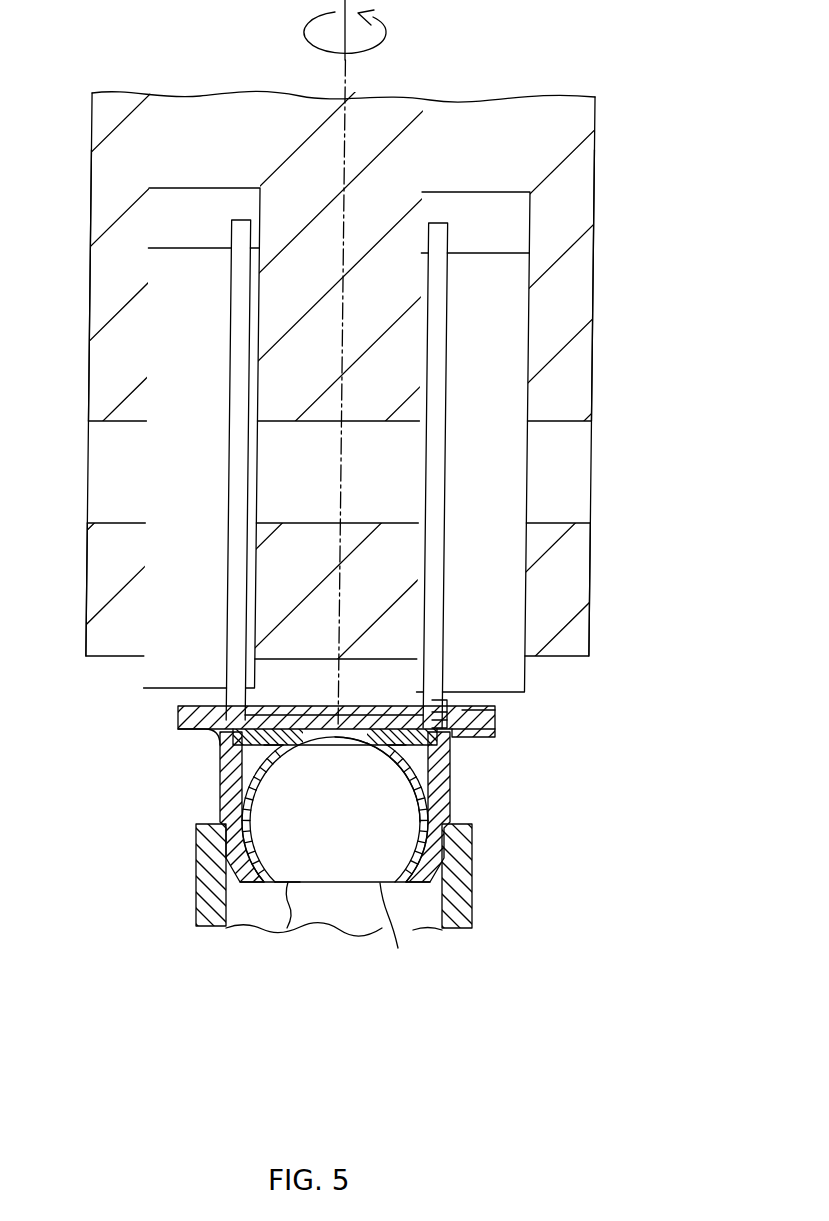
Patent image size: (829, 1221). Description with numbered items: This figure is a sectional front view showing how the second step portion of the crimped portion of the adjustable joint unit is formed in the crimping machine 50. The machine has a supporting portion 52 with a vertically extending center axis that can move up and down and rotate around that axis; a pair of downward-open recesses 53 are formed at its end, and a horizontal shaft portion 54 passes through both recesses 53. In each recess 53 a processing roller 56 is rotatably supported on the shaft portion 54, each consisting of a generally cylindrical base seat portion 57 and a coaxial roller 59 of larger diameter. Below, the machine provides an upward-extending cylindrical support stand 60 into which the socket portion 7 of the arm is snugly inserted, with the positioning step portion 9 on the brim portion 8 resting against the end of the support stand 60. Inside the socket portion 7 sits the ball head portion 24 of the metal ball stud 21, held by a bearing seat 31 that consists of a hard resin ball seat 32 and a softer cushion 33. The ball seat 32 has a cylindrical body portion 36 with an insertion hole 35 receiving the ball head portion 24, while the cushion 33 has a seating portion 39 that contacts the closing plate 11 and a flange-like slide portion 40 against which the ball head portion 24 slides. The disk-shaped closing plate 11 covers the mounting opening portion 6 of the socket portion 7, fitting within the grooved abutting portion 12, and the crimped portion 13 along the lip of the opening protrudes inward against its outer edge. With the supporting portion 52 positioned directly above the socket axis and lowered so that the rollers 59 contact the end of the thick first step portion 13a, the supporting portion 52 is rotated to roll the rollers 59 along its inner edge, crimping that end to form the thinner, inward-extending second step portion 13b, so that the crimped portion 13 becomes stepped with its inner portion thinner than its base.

The crimping machine 50 is at (685, 68).
The supporting portion 52 is at (580, 272).
The shaft portion 54 is at (575, 489).
The processing roller 56 is at (148, 345).
The base seat portion 57 is at (150, 618).
The recess 53 is at (142, 660).
The roller 59 is at (233, 238).
The closing plate 11 is at (348, 723).
The mounting opening portion 6 is at (470, 710).
The abutting portion 12 is at (463, 742).
The crimped portion 13 is at (452, 638).
The first step portion 13a is at (452, 706).
The second step portion 13b is at (440, 714).
The brim portion 8 is at (218, 815).
The socket portion 7 is at (438, 795).
The positioning step portion 9 is at (197, 838).
The support stand 60 is at (462, 906).
The seating portion 39 is at (290, 748).
The slide portion 40 is at (270, 760).
The cylindrical body portion 36 is at (249, 827).
The insertion hole 35 is at (262, 882).
The bearing seat 31 is at (357, 792).
The cushion 33 is at (393, 750).
The ball seat 32 is at (420, 823).
The ball stud 21 is at (424, 985).
The ball head portion 24 is at (292, 870).